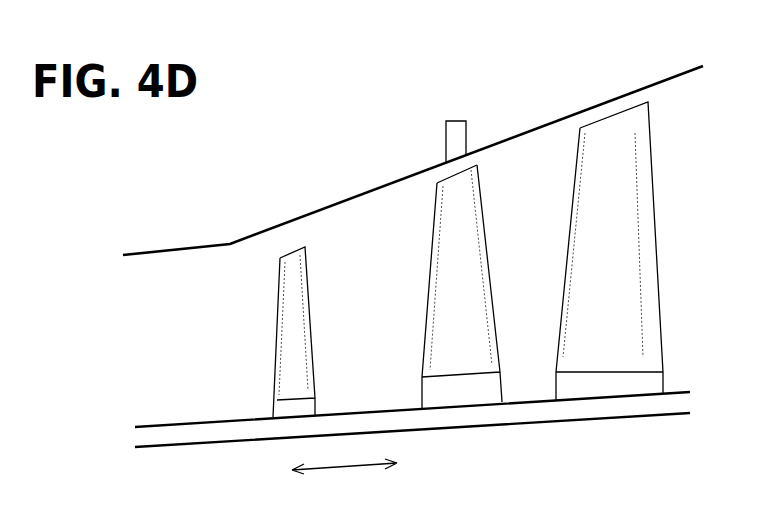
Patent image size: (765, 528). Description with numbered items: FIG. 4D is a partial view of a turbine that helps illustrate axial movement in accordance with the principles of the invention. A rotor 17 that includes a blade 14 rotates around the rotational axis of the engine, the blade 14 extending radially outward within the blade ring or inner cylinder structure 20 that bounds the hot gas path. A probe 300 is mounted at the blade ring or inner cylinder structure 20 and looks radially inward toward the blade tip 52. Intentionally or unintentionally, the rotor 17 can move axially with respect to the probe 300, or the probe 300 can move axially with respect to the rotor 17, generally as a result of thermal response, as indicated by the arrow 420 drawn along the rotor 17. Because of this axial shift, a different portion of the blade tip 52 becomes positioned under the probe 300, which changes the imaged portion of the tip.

The blade ring or inner cylinder structure 20 is at (653, 84).
The probe 300 is at (452, 140).
The blade tip 52 is at (440, 181).
The turbine blade 14 is at (458, 295).
The rotor 17 is at (643, 407).
The arrow 420 is at (357, 467).